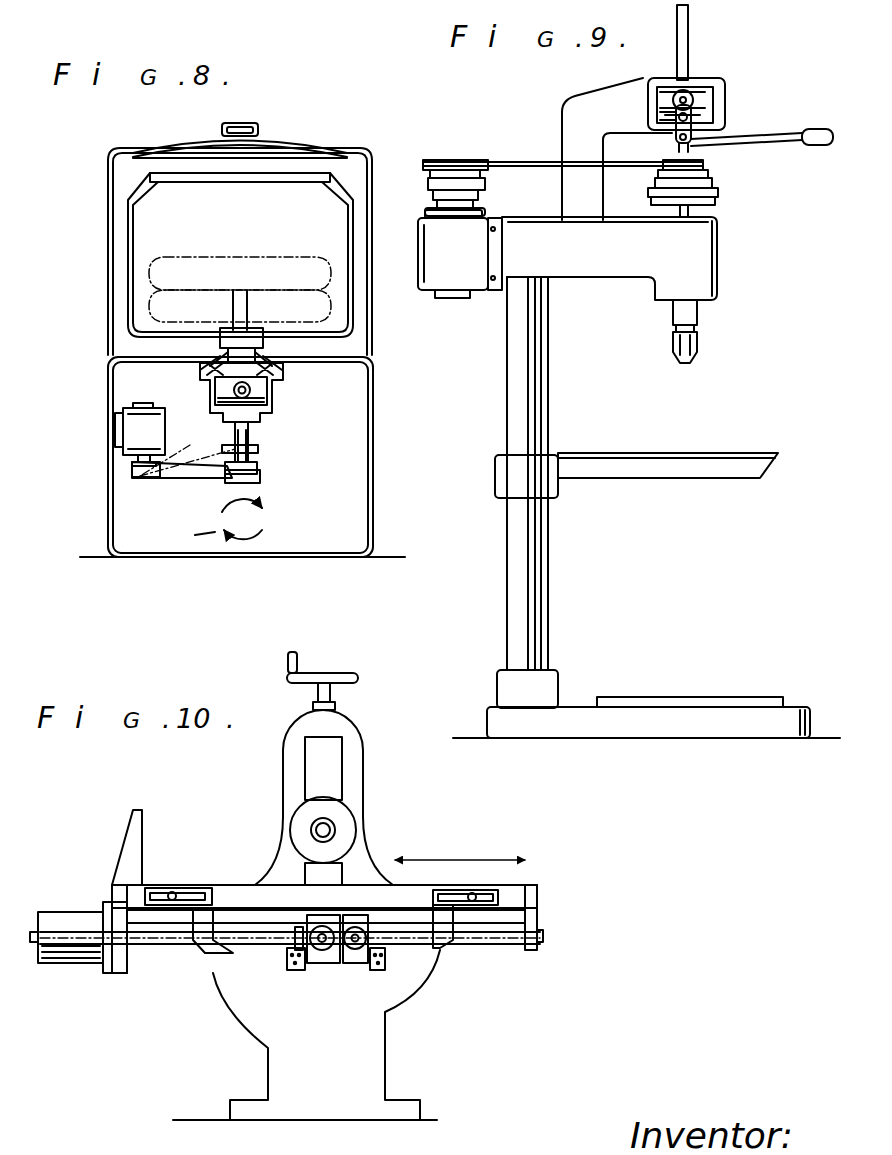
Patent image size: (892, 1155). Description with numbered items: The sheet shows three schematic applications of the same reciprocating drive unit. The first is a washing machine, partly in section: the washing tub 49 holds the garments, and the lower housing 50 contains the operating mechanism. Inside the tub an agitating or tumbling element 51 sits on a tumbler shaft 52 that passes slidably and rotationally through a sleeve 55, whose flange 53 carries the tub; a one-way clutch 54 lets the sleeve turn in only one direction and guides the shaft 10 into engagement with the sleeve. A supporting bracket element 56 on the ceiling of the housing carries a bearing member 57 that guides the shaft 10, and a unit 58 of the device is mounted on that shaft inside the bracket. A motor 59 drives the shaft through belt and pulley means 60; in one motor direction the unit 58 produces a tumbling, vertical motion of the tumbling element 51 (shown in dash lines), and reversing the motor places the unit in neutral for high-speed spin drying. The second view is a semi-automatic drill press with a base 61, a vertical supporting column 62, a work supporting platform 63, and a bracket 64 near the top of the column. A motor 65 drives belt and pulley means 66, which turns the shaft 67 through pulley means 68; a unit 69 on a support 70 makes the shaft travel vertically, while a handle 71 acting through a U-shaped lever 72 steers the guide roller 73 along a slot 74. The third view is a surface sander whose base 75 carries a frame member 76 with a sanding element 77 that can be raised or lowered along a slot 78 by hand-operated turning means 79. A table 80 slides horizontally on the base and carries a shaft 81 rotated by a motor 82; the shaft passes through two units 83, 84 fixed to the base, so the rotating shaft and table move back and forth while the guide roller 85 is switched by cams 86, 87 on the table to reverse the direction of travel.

In FIG. 8, the shaft 10 is at (249, 433).
In FIG. 8, the washing tub 49 is at (130, 264).
In FIG. 8, the lower housing 50 is at (108, 498).
In FIG. 8, the agitating or tumbling element 51 is at (172, 300).
In FIG. 8, the tumbler shaft 52 is at (234, 317).
In FIG. 8, the flange 53 is at (263, 332).
In FIG. 8, the one-way clutch 54 is at (312, 364).
In FIG. 8, the sleeve 55 is at (205, 380).
In FIG. 8, the supporting bracket element 56 is at (278, 406).
In FIG. 8, the bearing member 57 is at (258, 425).
In FIG. 8, the unit of the device 58 is at (258, 386).
In FIG. 8, the motor 59 is at (123, 435).
In FIG. 8, the belt and pulley means 60 is at (196, 450).
In FIG. 9, the base 61 is at (752, 726).
In FIG. 9, the vertical supporting column 62 is at (540, 612).
In FIG. 9, the work supporting platform 63 is at (642, 478).
In FIG. 9, the bracket 64 is at (583, 265).
In FIG. 9, the motor 65 is at (470, 277).
In FIG. 9, the belt and pulley means 66 is at (467, 160).
In FIG. 9, the shaft 67 is at (688, 50).
In FIG. 9, the pulley means 68 is at (718, 186).
In FIG. 9, the unit of the device 69 is at (712, 110).
In FIG. 9, the support 70 is at (592, 105).
In FIG. 9, the handle 71 is at (830, 133).
In FIG. 9, the U-shaped lever 72 is at (694, 125).
In FIG. 9, the guide roller 73 is at (692, 102).
In FIG. 9, the slot 74 is at (660, 117).
In FIG. 10, the base 75 is at (283, 1063).
In FIG. 10, the frame member 76 is at (355, 778).
In FIG. 10, the sanding element 77 is at (345, 825).
In FIG. 10, the slot 78 is at (333, 750).
In FIG. 10, the hand-operated turning means 79 is at (345, 675).
In FIG. 10, the table 80 is at (527, 893).
In FIG. 10, the shaft 81 is at (498, 940).
In FIG. 10, the motor 82 is at (87, 958).
In FIG. 10, the unit of the device 83 is at (325, 952).
In FIG. 10, the unit of the device 84 is at (355, 958).
In FIG. 10, the guide roller 85 is at (320, 930).
In FIG. 10, the cam 86 is at (200, 940).
In FIG. 10, the cam 87 is at (440, 940).